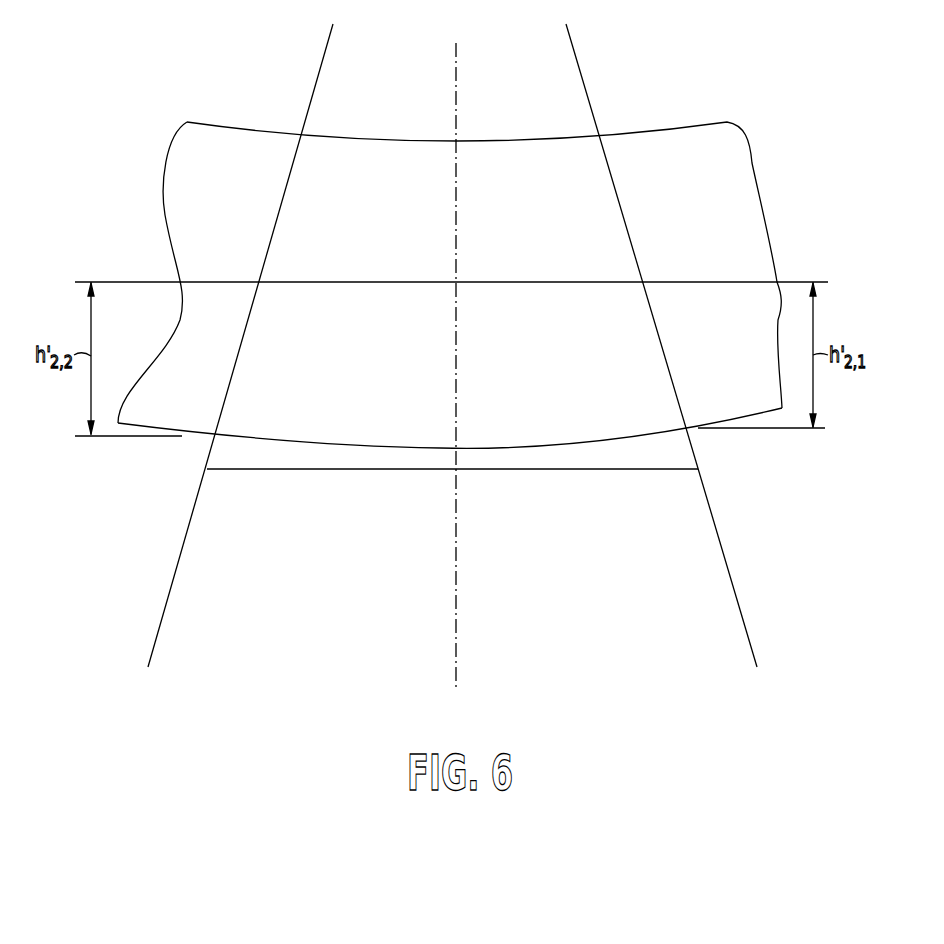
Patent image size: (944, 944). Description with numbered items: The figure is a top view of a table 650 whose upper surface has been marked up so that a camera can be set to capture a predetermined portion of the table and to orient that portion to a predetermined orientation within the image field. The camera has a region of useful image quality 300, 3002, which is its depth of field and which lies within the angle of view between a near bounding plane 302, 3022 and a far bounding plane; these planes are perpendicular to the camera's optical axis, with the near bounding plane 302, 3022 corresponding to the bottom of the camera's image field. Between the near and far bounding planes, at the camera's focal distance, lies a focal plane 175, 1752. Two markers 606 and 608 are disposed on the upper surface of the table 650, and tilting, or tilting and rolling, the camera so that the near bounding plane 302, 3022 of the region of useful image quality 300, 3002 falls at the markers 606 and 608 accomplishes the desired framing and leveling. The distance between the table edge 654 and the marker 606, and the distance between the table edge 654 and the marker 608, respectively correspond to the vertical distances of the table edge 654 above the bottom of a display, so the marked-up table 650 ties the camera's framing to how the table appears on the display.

The table 650 is at (476, 323).
The marker 608 is at (214, 280).
The marker 606 is at (694, 280).
The near bounding plane 3022 is at (449, 245).
The near bounding plane 302 is at (537, 280).
The region of useful image quality 3002 is at (616, 444).
The region of useful image quality 300 is at (680, 454).
The table edge 654 is at (262, 443).
The focal plane 1752 is at (452, 506).
The focal plane 175 is at (567, 470).